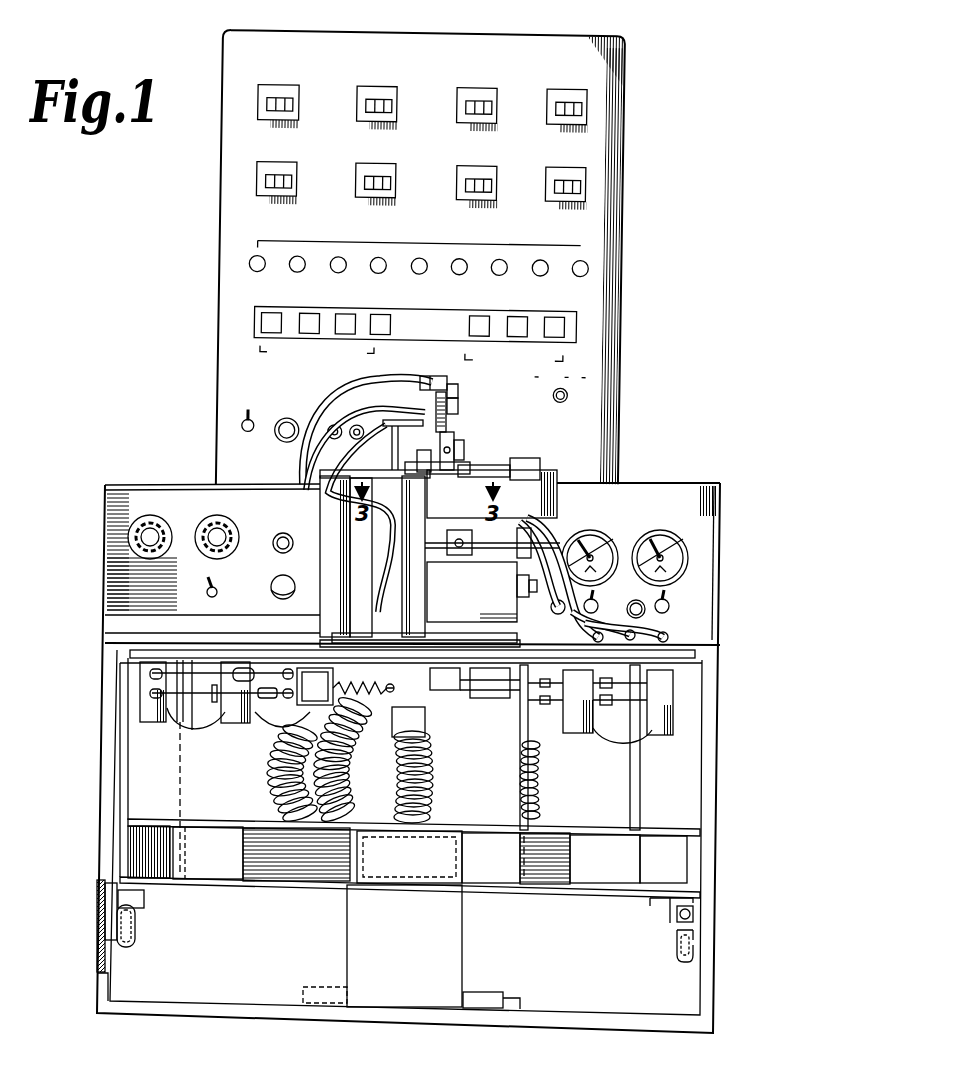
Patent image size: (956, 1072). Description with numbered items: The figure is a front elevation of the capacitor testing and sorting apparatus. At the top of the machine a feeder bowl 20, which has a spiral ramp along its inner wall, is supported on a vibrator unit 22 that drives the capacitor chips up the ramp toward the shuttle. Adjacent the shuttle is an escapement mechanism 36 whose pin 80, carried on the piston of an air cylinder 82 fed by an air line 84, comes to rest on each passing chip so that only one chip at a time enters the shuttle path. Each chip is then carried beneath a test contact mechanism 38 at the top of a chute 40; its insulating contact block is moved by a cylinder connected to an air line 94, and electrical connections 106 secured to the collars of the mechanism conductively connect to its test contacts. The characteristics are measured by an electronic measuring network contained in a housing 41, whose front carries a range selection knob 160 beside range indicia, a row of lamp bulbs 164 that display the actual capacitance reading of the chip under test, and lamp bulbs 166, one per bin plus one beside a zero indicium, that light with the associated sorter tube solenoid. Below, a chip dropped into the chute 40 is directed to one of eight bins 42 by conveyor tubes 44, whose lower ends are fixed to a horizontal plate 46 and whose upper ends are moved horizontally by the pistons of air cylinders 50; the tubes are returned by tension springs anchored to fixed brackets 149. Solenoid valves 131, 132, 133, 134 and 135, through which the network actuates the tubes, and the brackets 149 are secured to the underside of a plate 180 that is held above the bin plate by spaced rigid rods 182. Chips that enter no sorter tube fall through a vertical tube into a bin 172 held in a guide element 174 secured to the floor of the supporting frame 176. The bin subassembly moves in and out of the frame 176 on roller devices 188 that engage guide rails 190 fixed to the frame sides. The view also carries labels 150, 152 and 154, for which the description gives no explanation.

The housing 41 is at (415, 256).
The lamp bulbs 166 is at (248, 259).
The row of lamp bulbs 164 is at (248, 319).
The range selection knob 160 is at (567, 398).
The air line 94 is at (308, 448).
The air line 84 is at (352, 396).
The electrical connections 106 is at (322, 494).
The escapement mechanism 36 is at (458, 420).
The air cylinder 82 is at (452, 432).
The pin 80 is at (456, 456).
The test contact mechanism 38 is at (406, 460).
The dwell control panel 154 is at (189, 535).
The forward dwell knob 150 is at (128, 534).
The rear dwell knob 152 is at (198, 546).
The feeder bowl 20 is at (558, 503).
The chute 40 is at (428, 605).
The vibrator unit 22 is at (480, 594).
The supporting frame 176 is at (718, 759).
The plate 180 is at (130, 659).
The solenoid valve 131 is at (146, 728).
The solenoid valve 132 is at (236, 729).
The air cylinder 50 is at (240, 666).
The fixed brackets 149 is at (290, 666).
The solenoid valve 134 is at (578, 738).
The solenoid valve 135 is at (673, 746).
The rigid rods 182 is at (174, 770).
The conveyor tube 44 is at (300, 781).
The solenoid valve 133 is at (392, 756).
The horizontal plate 46 is at (169, 820).
The bins 42 is at (256, 879).
The bin 172 is at (412, 962).
The guide element 174 is at (511, 1003).
The roller devices 188 is at (97, 894).
The guide rails 190 is at (136, 944).